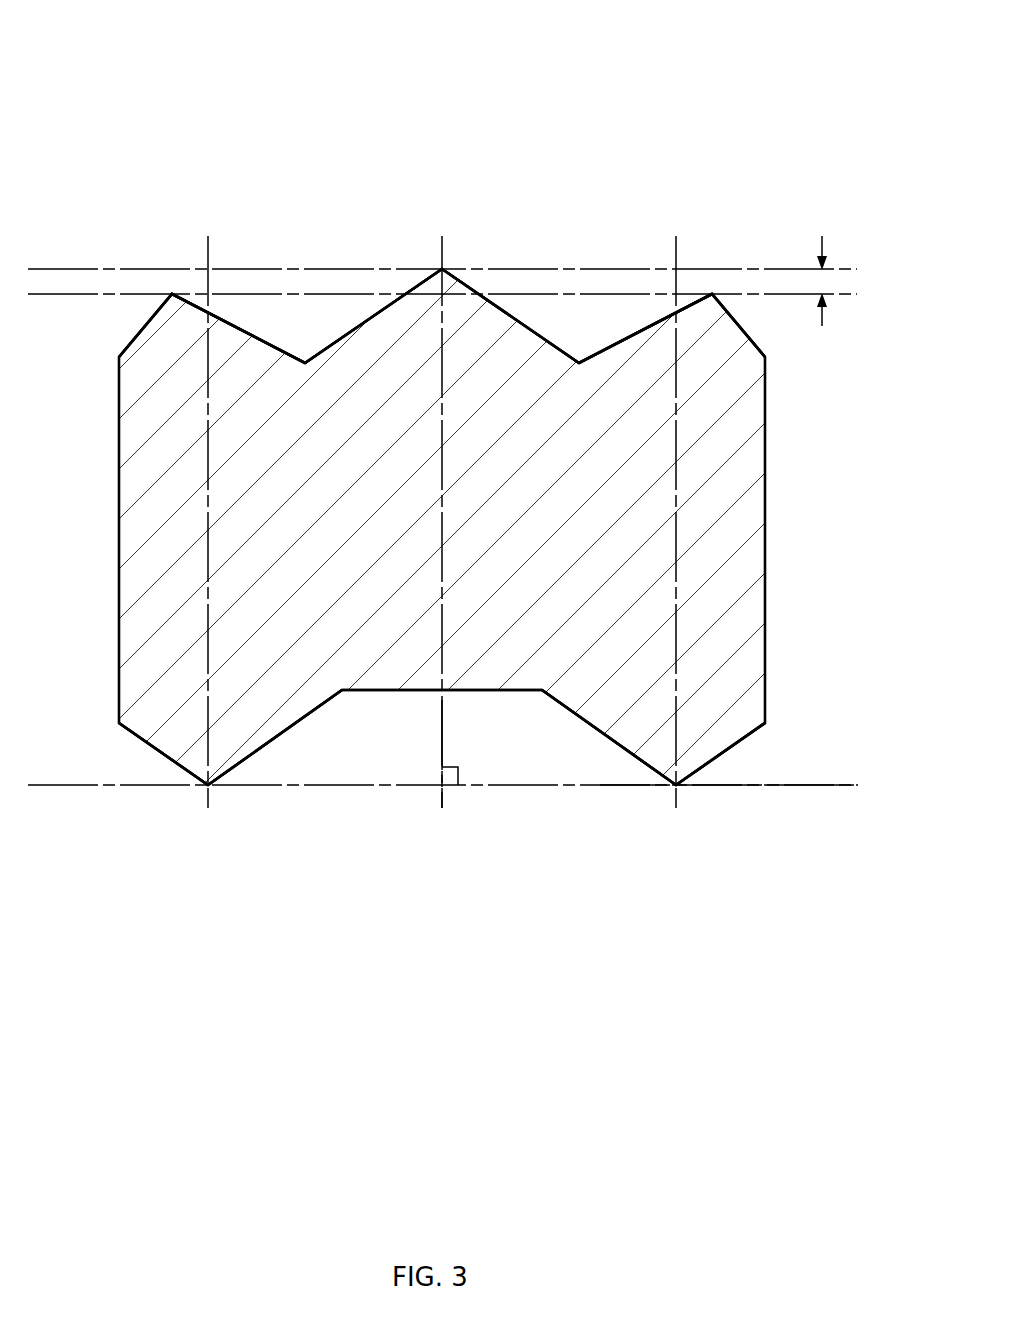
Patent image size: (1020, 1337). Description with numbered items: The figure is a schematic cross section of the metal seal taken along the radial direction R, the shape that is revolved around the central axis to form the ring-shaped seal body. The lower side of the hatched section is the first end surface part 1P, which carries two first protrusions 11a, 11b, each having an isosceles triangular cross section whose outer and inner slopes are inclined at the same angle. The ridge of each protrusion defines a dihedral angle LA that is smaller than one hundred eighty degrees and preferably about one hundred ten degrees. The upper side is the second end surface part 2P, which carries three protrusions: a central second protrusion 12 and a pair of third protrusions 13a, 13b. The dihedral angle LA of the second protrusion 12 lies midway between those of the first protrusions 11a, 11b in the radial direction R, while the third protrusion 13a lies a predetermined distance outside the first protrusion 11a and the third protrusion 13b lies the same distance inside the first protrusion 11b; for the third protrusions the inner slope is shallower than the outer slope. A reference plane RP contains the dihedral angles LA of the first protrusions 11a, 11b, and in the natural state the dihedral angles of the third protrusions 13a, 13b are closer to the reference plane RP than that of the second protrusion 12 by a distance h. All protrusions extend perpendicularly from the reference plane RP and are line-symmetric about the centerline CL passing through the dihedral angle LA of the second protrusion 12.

The first end surface part 1P is at (735, 897).
The second end surface part 2P is at (735, 187).
The first protrusion 11a is at (650, 795).
The first protrusion 11b is at (234, 795).
The second protrusion 12 is at (470, 268).
The third protrusion 13a is at (698, 282).
The third protrusion 13b is at (181, 280).
The dihedral angle LA is at (172, 294).
The centerline CL is at (443, 767).
The reference plane RP is at (749, 787).
The radial direction R is at (720, 28).
The distance h is at (832, 281).